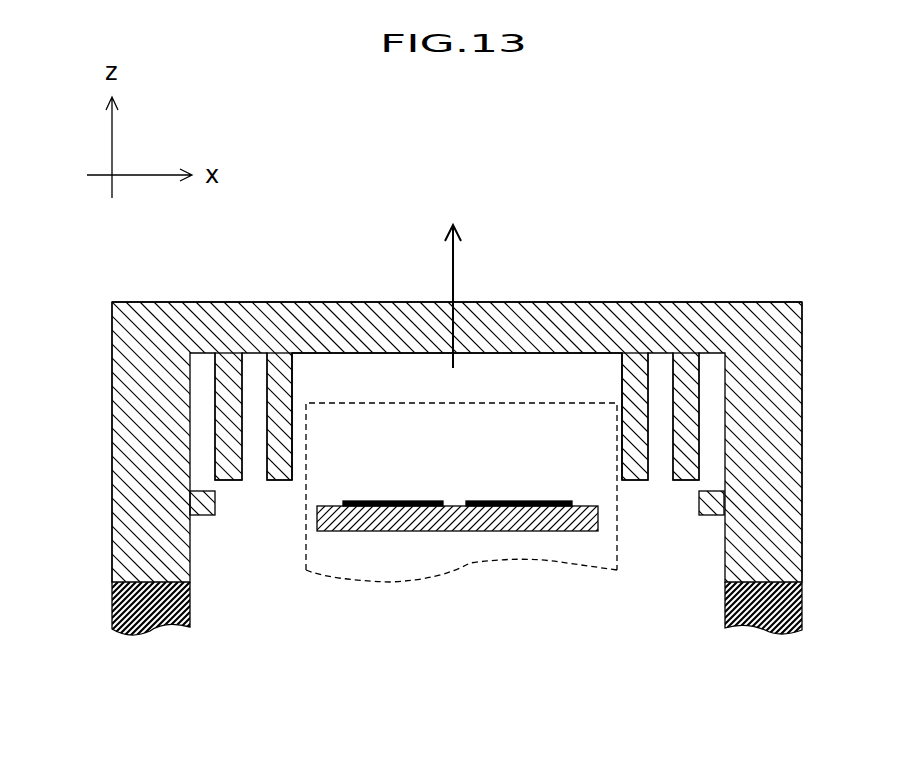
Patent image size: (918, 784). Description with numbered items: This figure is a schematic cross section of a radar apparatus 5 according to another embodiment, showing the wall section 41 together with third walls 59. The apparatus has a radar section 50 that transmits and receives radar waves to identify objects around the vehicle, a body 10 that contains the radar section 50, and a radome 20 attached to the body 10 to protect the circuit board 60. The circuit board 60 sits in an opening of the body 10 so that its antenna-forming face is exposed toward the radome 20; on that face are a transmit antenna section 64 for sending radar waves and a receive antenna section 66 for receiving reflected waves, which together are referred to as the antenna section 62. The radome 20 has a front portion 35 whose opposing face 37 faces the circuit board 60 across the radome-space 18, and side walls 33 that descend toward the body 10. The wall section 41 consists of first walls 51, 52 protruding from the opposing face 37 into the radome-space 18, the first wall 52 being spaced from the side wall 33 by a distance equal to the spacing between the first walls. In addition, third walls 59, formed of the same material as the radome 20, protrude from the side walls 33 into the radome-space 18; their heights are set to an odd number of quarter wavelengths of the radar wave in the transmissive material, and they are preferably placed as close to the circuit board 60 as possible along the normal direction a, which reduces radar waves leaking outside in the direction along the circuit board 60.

The vibrating element 5 is at (408, 198).
The body 10 is at (112, 618).
The radome-space 18 is at (590, 377).
The radome 20 is at (138, 302).
The side wall 33 is at (128, 498).
The front portion 35 is at (298, 314).
The opposing face 37 is at (360, 358).
The wall section 41 is at (292, 582).
The radar section 50 is at (480, 562).
The first wall 51 is at (273, 480).
The first wall 52 is at (228, 480).
The third wall 59 is at (205, 516).
The circuit board 60 is at (440, 531).
The antenna section 62 is at (485, 460).
The transmit antenna section 64 is at (380, 500).
The receive antenna section 66 is at (540, 500).
The normal direction a is at (453, 275).